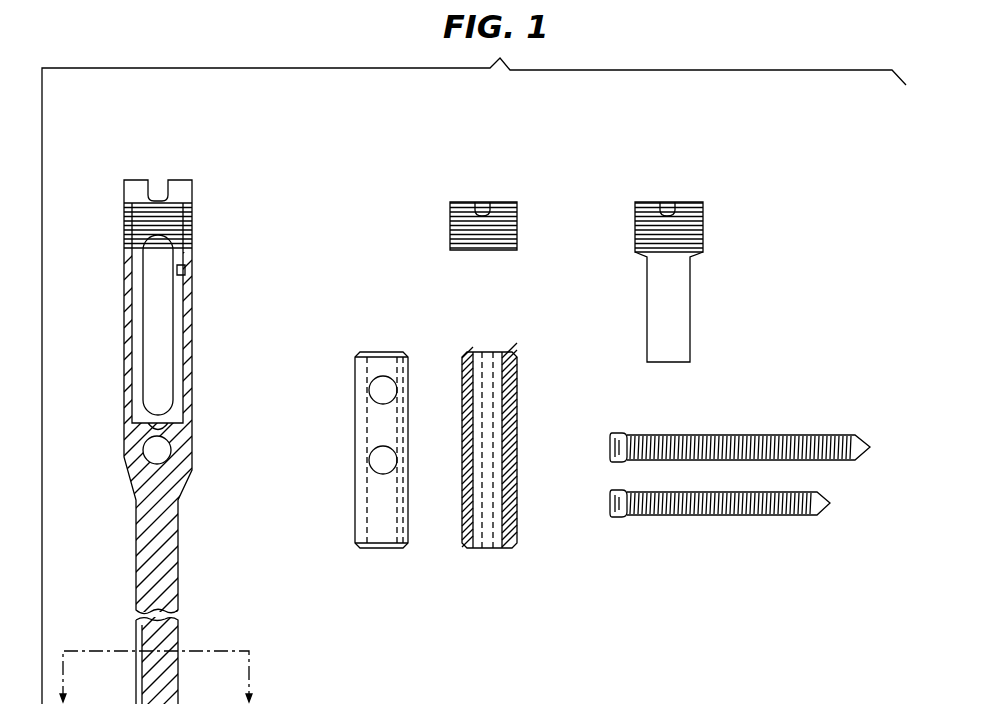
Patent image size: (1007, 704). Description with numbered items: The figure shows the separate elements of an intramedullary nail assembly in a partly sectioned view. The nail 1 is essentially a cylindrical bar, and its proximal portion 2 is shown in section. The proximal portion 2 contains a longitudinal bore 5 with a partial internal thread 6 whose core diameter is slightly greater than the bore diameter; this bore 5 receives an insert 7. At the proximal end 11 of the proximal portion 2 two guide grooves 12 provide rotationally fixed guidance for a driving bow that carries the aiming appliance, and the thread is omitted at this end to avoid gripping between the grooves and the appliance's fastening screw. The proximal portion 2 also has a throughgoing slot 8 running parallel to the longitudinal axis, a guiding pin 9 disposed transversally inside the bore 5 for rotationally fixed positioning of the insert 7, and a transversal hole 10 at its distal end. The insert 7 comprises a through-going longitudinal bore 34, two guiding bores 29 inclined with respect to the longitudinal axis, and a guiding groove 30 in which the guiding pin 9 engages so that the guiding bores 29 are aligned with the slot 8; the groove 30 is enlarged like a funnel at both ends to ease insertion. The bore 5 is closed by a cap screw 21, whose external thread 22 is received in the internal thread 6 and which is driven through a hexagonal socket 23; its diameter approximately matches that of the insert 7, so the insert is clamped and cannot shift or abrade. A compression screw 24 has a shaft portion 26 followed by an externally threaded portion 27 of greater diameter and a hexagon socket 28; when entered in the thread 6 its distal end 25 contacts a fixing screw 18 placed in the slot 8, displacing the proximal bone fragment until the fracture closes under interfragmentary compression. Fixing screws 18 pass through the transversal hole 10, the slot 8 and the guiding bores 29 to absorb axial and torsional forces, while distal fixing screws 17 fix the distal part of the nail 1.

The nail 1 is at (125, 548).
The proximal portion 2 is at (161, 400).
The longitudinal bore 5 is at (135, 352).
The internal thread 6 is at (175, 207).
The insert 7 is at (438, 466).
The throughgoing slot 8 is at (165, 292).
The guiding pin 9 is at (186, 270).
The transversal hole 10 is at (161, 452).
The proximal end 11 is at (133, 180).
The guide grooves 12 is at (163, 197).
The distal fixing screws 17 is at (778, 508).
The fixing screw 18 is at (832, 436).
The cap screw 21 is at (489, 199).
The external thread of end cap 22 is at (453, 210).
The hexagonal socket 23 is at (484, 210).
The compression screw 24 is at (713, 280).
The distal end 25 is at (665, 364).
The shaft portion 26 is at (680, 333).
The externally threaded portion 27 is at (700, 205).
The hexagon socket 28 is at (668, 210).
The guiding bores 29 is at (376, 390).
The guiding groove 30 is at (493, 352).
The through-going longitudinal bore 34 is at (500, 528).